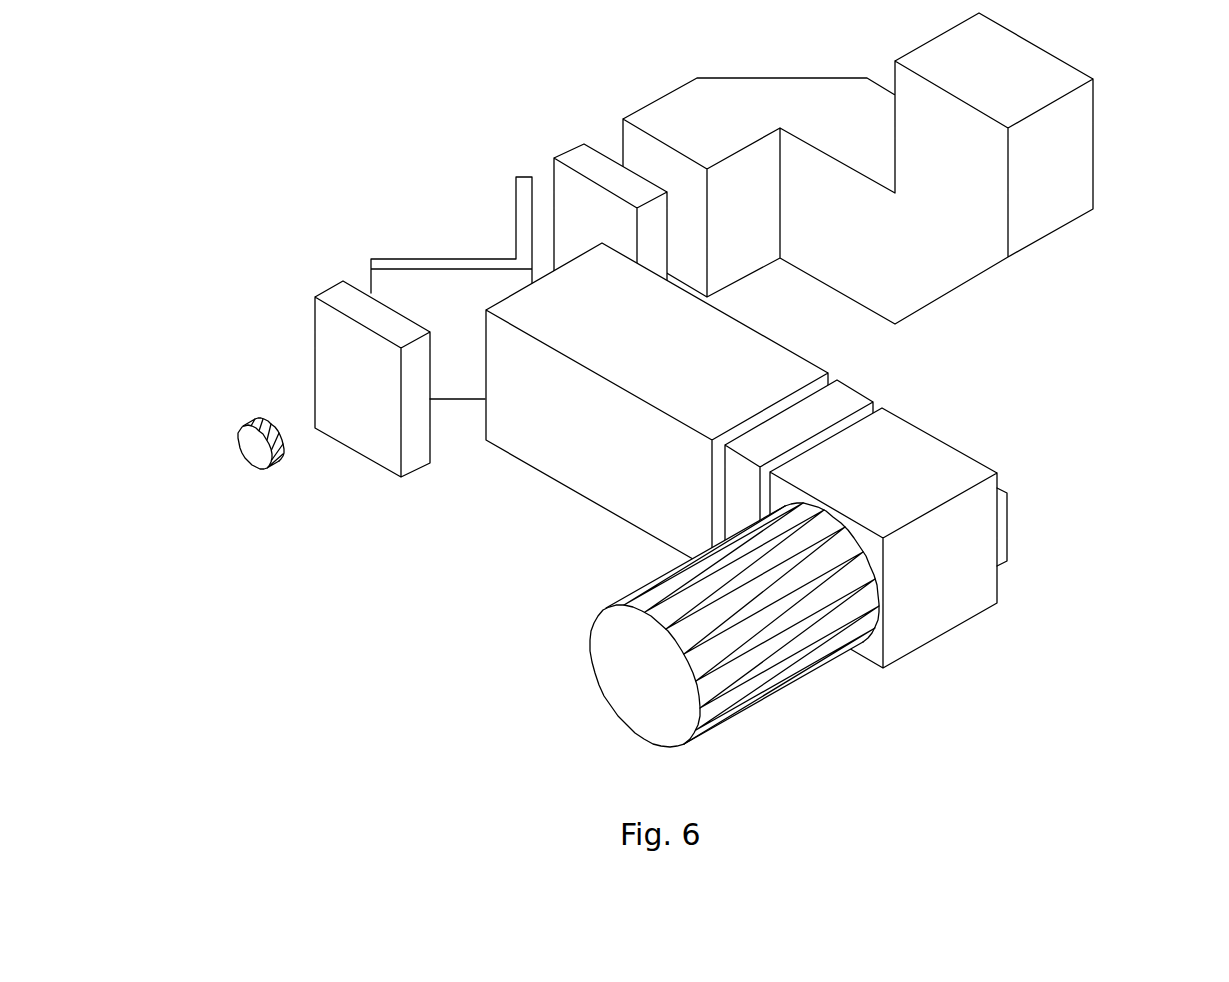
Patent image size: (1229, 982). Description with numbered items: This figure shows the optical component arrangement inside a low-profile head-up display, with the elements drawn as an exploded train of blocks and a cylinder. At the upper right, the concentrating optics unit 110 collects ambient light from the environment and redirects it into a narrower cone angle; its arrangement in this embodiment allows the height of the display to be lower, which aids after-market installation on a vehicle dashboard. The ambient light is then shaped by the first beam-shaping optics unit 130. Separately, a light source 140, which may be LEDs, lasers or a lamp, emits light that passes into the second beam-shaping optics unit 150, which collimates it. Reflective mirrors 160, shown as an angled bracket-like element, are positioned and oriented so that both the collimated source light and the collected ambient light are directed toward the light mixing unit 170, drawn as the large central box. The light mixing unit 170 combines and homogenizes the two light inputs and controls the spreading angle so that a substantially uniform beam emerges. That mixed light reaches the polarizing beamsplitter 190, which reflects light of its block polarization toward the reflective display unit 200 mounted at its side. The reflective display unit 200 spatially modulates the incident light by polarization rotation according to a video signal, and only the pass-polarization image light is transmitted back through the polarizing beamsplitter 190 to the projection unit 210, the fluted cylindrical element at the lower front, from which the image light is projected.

The concentrating optics unit 110 is at (1104, 153).
The first beam-shaping optics unit 130 is at (574, 135).
The light source 140 is at (249, 456).
The second beam-shaping optics unit 150 is at (330, 275).
The reflective mirrors 160 is at (504, 211).
The light mixing unit 170 is at (742, 361).
The polarizing beamsplitter 190 is at (968, 444).
The reflective display unit 200 is at (1016, 529).
The projection unit 210 is at (612, 690).